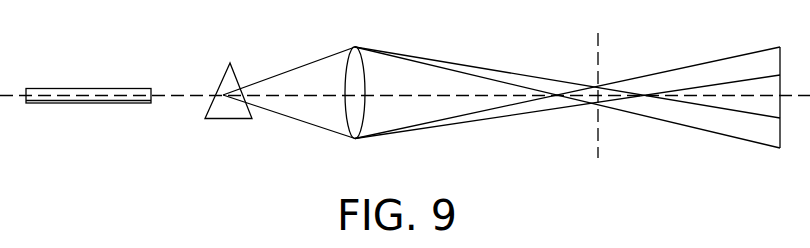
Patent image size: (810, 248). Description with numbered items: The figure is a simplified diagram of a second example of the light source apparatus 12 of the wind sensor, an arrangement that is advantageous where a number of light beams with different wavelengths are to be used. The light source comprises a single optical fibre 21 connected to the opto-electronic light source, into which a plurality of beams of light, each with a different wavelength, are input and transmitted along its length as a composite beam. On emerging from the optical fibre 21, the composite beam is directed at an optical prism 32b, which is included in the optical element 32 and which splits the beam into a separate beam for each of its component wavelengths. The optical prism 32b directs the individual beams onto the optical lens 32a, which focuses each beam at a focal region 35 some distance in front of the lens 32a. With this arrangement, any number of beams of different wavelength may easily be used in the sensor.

The light source unit 12 is at (88, 121).
The optical fibre 21 is at (89, 88).
The optical element 32 is at (471, 114).
The optical lens 32a is at (363, 58).
The optical prism 32b is at (225, 75).
The focal region 35 is at (600, 87).